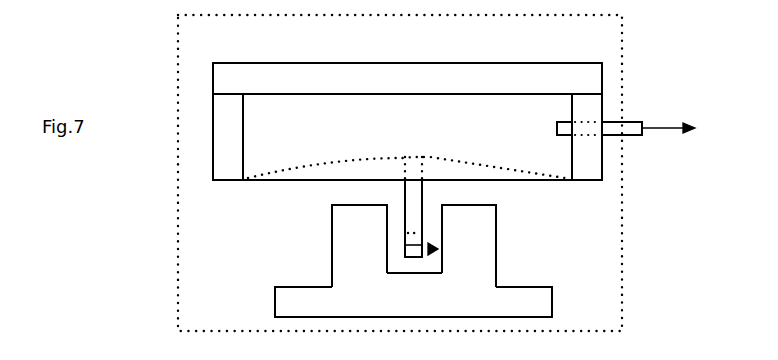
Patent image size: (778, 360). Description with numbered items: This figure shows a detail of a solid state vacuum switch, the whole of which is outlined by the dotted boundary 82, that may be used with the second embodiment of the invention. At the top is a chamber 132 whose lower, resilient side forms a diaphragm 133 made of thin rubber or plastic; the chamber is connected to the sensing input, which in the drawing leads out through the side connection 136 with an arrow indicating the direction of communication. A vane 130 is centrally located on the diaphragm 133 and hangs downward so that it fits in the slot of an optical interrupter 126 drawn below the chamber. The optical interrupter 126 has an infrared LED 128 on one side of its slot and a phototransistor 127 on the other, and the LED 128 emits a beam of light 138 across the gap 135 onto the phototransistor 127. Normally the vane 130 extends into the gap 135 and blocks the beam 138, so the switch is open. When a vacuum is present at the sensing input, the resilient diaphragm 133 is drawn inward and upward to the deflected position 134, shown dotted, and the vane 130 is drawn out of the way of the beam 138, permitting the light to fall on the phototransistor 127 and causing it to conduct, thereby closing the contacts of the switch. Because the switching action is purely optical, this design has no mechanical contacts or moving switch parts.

The housing / enclosure boundary 82 is at (178, 59).
The chamber 132 is at (258, 66).
The diaphragm 133 is at (332, 180).
The deflected position 134 is at (392, 157).
The vane 130 is at (423, 195).
The beam of light 138 is at (387, 245).
The outlet tube 136 is at (630, 122).
The optical interrupter 126 is at (327, 298).
The phototransistor 127 is at (469, 246).
The infrared LED 128 is at (359, 246).
The gap 135 is at (425, 265).